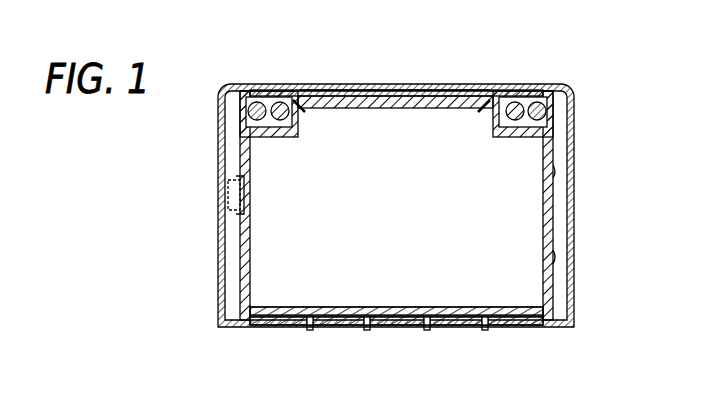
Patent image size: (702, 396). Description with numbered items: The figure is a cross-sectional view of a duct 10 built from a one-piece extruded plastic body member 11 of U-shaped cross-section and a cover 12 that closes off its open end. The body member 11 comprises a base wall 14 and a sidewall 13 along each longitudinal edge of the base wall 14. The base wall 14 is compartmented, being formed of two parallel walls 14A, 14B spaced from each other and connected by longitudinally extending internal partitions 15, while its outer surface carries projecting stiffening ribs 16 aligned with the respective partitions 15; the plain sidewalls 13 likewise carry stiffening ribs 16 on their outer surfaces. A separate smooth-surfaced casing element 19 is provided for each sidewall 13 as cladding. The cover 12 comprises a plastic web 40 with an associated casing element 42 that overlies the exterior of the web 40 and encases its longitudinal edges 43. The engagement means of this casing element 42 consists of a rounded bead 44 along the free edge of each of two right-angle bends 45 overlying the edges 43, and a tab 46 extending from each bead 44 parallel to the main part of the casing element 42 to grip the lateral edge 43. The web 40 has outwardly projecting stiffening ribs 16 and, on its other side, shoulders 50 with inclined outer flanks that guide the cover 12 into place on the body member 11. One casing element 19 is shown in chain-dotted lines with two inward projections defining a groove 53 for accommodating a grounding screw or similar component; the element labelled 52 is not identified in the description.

The duct 10 is at (589, 77).
The body member 11 is at (529, 336).
The cover 12 is at (409, 86).
The sidewall 13 is at (234, 248).
The base wall 14 is at (375, 300).
The parallel wall 14A is at (403, 307).
The parallel wall 14B is at (460, 307).
The internal partition 15 is at (305, 323).
The stiffening rib 16 is at (333, 90).
The casing element 19 is at (590, 148).
The web 40 is at (403, 110).
The casing element 42 is at (374, 90).
The longitudinal edge 43 is at (293, 96).
The rounded bead 44 is at (514, 122).
The right-angle bend 45 is at (268, 92).
The tab 46 is at (499, 128).
The shoulder 50 is at (301, 109).
The insulation 52 is at (226, 197).
The groove 53 is at (246, 195).